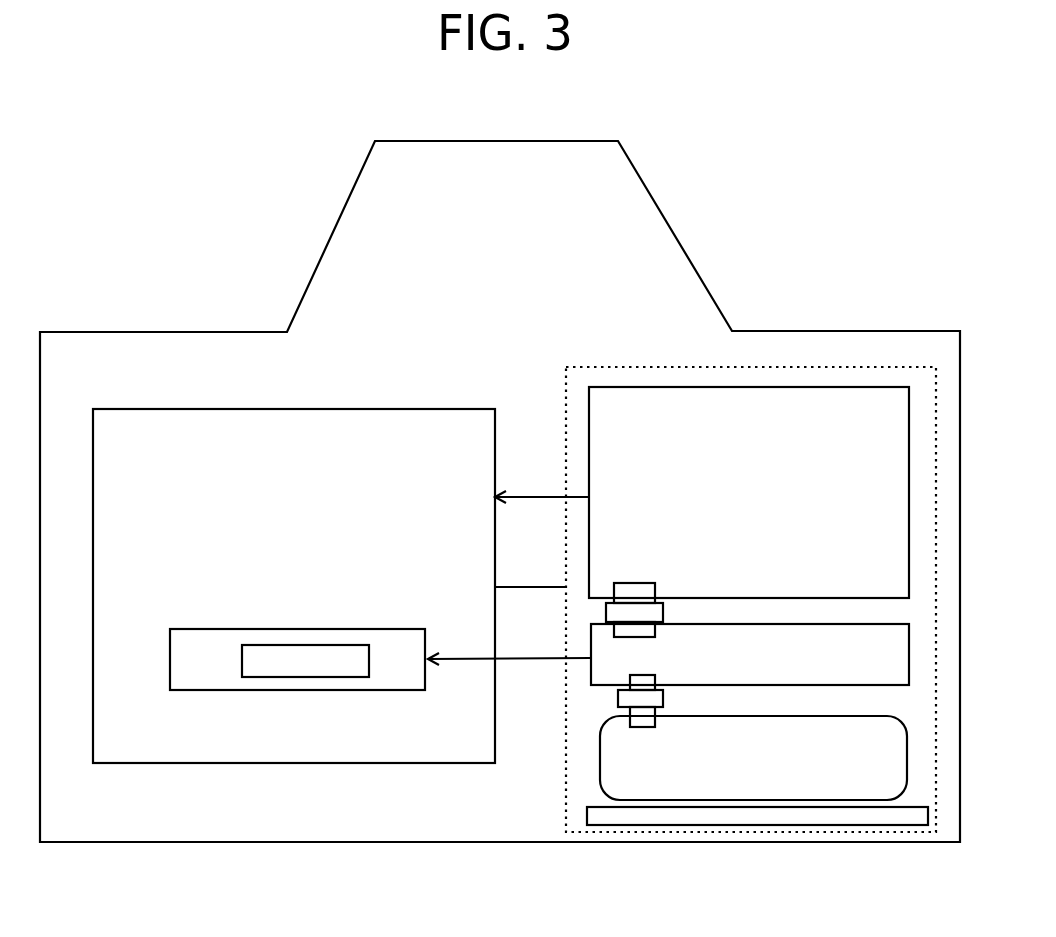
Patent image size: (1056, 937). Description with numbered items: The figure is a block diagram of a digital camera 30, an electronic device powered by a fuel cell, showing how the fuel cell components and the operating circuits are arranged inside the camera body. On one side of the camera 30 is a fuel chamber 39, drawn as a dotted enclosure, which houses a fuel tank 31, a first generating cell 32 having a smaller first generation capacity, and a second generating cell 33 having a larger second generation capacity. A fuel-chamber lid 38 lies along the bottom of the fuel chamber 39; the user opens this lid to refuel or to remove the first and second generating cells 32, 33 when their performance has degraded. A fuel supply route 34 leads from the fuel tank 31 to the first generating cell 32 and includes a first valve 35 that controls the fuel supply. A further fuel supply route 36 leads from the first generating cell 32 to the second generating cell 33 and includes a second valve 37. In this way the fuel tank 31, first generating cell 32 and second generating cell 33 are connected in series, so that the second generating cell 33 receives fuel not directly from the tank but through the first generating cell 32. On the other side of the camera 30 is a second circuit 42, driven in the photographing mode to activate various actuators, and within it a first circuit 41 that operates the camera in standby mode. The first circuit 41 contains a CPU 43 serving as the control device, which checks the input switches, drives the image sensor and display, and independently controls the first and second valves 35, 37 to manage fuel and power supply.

The digital camera 30 is at (663, 226).
The fuel tank 31 is at (897, 764).
The first generating cell 32 is at (902, 656).
The second generating cell 33 is at (896, 458).
The fuel supply route 34 is at (641, 717).
The first valve 35 is at (660, 705).
The fuel supply route 36 is at (632, 587).
The second valve 37 is at (663, 612).
The fuel-chamber lid 38 is at (895, 815).
The fuel chamber 39 is at (840, 368).
The first circuit 41 is at (390, 680).
The second circuit 42 is at (215, 748).
The CPU 43 is at (299, 665).